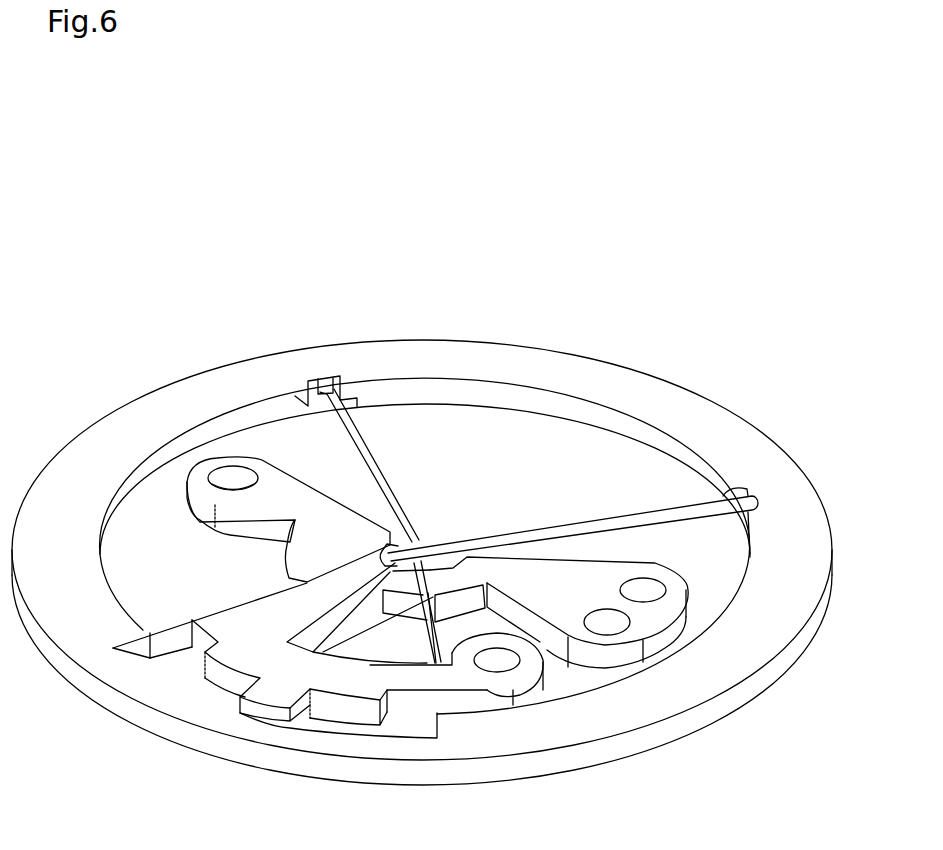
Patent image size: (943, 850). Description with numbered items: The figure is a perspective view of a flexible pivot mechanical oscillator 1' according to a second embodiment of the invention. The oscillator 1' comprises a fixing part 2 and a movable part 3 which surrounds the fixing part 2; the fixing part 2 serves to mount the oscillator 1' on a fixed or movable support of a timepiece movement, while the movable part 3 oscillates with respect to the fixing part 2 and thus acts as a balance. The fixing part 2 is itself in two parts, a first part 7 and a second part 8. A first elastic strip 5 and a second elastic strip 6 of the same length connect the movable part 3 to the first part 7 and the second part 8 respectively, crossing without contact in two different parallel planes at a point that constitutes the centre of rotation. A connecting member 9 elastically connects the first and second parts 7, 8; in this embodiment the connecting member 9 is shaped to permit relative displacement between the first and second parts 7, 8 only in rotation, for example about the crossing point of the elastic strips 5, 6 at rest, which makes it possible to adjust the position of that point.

The flexible pivot mechanical oscillator 1' is at (422, 508).
The fixing part 2 is at (684, 577).
The movable part 3 is at (174, 401).
The first elastic strip 5 is at (548, 522).
The second elastic strip 6 is at (377, 472).
The first part 7 is at (288, 481).
The second part 8 is at (612, 578).
The connecting member 9 is at (213, 611).